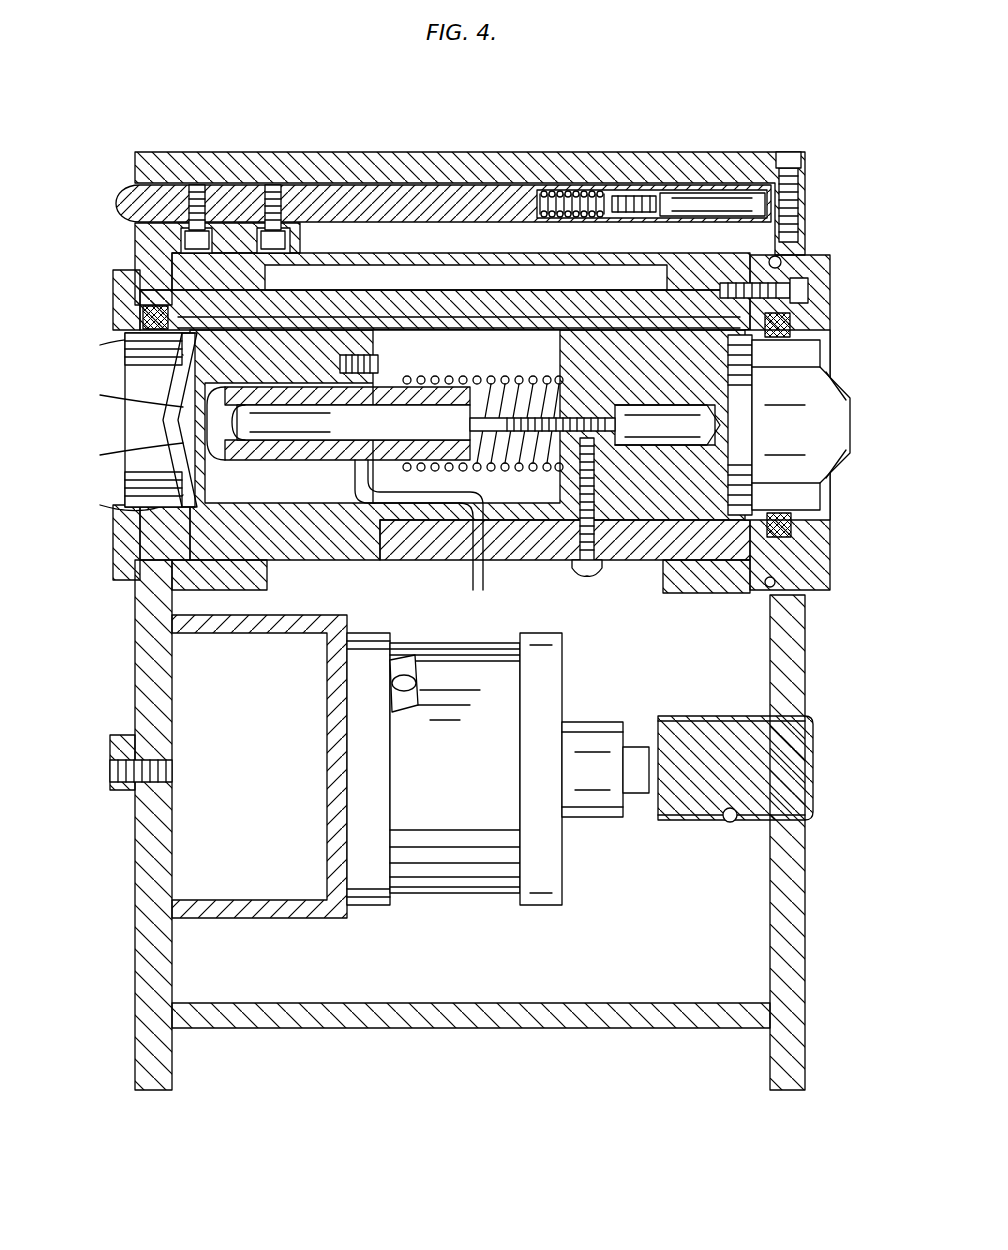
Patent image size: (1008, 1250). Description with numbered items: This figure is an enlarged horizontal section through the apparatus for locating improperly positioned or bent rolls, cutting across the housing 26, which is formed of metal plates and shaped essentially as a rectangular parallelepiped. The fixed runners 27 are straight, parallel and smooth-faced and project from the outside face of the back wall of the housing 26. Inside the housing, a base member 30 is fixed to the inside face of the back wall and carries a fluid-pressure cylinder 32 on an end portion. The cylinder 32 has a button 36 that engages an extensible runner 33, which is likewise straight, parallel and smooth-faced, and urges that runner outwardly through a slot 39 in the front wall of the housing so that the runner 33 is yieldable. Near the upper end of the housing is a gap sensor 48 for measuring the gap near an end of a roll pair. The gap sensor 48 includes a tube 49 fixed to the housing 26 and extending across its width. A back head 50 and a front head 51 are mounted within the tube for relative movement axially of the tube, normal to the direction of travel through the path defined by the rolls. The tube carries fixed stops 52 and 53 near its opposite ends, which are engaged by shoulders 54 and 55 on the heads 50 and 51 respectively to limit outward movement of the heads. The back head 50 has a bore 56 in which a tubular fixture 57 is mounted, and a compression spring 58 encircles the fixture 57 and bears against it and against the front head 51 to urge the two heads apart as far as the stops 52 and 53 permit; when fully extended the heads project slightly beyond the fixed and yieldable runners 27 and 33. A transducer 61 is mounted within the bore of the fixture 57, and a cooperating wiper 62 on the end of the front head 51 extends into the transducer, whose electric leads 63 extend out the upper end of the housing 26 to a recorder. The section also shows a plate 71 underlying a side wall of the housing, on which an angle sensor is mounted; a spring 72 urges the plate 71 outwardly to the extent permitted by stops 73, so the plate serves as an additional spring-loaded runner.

The housing 26 is at (360, 152).
The fixed runners 27 is at (112, 790).
The base member 30 is at (326, 788).
The fluid-pressure cylinder 32 is at (470, 900).
The extensible runners 33 is at (783, 795).
The button 36 is at (640, 798).
The slot 39 is at (735, 822).
The gap sensor 48 is at (124, 430).
The tube 49 is at (442, 290).
The back head 50 is at (112, 410).
The front head 51 is at (852, 418).
The fixed stop 52 is at (125, 470).
The fixed stop 53 is at (798, 512).
The shoulder 54 is at (140, 340).
The shoulder 55 is at (792, 332).
The bore 56 is at (172, 390).
The tubular fixture 57 is at (302, 385).
The compression spring 58 is at (437, 378).
The transducer 61 is at (406, 434).
The wiper 62 is at (498, 384).
The electric leads 63 is at (470, 583).
The plate 71 is at (120, 205).
The spring 72 is at (582, 190).
The stop 73 is at (292, 240).